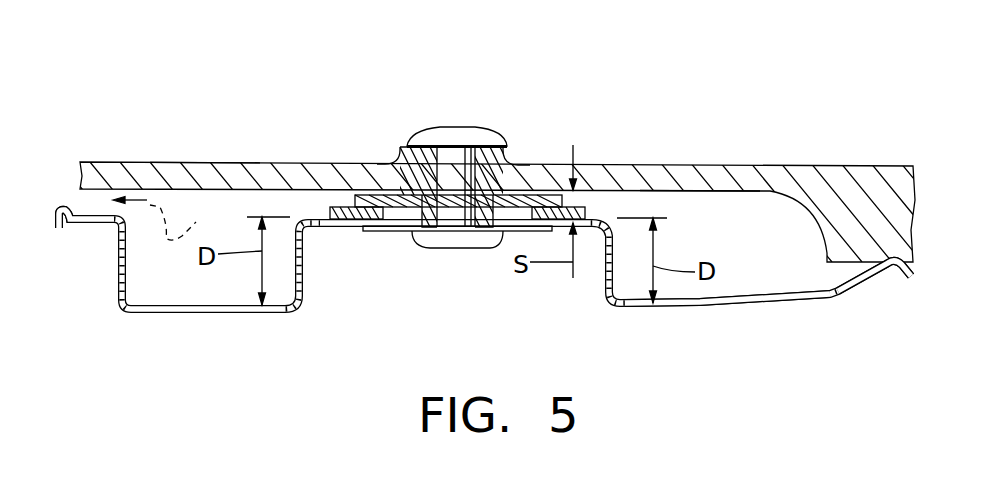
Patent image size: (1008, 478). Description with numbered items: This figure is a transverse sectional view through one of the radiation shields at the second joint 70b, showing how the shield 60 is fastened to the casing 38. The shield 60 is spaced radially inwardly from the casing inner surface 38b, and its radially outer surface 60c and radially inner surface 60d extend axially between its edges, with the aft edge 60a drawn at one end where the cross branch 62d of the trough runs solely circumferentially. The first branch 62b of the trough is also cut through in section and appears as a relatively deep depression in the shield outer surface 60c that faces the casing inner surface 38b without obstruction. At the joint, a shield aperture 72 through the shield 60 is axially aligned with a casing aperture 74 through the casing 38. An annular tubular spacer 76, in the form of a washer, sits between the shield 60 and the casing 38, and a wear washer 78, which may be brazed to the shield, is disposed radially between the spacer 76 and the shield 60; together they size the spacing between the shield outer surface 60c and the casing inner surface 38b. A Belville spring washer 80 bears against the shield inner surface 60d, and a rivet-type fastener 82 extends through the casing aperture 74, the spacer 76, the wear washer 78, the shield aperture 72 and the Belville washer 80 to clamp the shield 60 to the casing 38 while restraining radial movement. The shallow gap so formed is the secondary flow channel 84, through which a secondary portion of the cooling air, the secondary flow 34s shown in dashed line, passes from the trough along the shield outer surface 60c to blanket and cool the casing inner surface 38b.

The casing 38 is at (772, 160).
The casing inner surface 38b is at (668, 193).
The secondary flow 34s is at (172, 196).
The secondary flow channel 84 is at (95, 195).
The shield 60 is at (119, 311).
The shield outer surface 60c is at (58, 224).
The first branch 62b is at (220, 304).
The shield inner surface 60d is at (330, 227).
The cross branch 62d is at (800, 290).
The aft edge 60a is at (893, 266).
The second joint 70b is at (478, 160).
The fastener 82 is at (453, 126).
The casing aperture 74 is at (509, 145).
The spacer 76 is at (382, 165).
The wear washer 78 is at (583, 202).
The shield aperture 72 is at (393, 231).
The Belville spring washer 80 is at (402, 232).